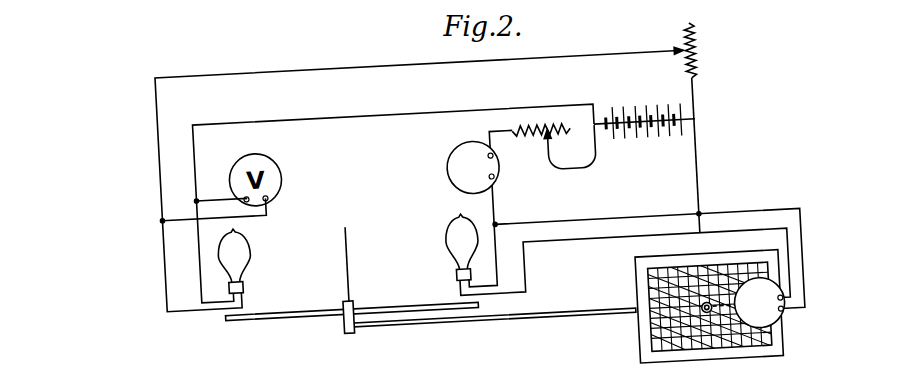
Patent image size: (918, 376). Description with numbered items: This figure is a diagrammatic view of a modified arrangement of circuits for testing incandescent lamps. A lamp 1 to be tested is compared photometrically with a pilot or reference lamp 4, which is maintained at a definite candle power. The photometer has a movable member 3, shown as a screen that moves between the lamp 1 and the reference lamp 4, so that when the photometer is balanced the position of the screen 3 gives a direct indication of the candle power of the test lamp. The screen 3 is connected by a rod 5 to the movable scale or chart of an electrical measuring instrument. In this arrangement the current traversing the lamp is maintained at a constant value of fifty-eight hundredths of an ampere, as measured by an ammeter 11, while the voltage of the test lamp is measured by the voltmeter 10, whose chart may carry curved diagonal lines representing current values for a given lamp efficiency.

The lamp to be tested 1 is at (451, 247).
The movable member 3 is at (327, 326).
The pilot or reference lamp 4 is at (247, 256).
The rod 5 is at (514, 336).
The voltmeter 10 is at (779, 375).
The ammeter 11 is at (444, 168).